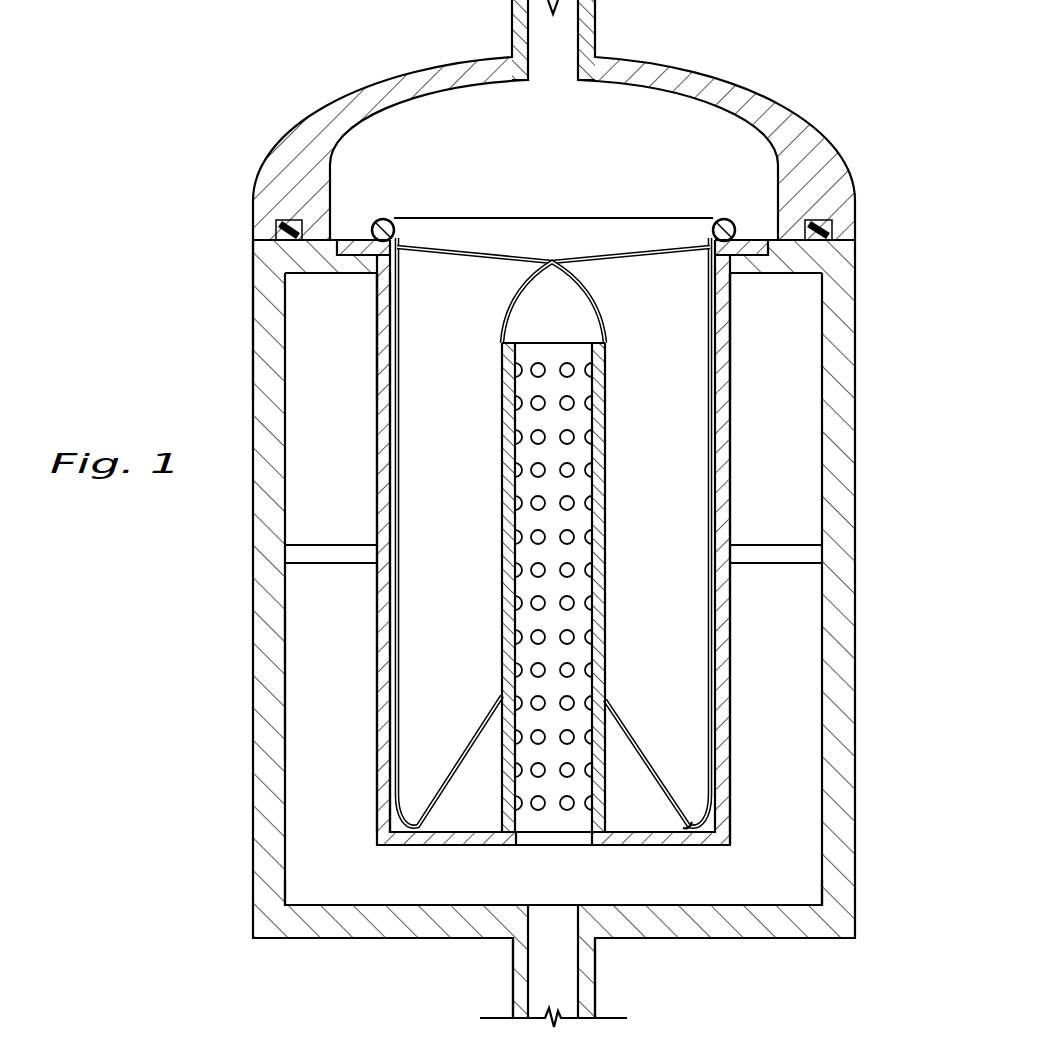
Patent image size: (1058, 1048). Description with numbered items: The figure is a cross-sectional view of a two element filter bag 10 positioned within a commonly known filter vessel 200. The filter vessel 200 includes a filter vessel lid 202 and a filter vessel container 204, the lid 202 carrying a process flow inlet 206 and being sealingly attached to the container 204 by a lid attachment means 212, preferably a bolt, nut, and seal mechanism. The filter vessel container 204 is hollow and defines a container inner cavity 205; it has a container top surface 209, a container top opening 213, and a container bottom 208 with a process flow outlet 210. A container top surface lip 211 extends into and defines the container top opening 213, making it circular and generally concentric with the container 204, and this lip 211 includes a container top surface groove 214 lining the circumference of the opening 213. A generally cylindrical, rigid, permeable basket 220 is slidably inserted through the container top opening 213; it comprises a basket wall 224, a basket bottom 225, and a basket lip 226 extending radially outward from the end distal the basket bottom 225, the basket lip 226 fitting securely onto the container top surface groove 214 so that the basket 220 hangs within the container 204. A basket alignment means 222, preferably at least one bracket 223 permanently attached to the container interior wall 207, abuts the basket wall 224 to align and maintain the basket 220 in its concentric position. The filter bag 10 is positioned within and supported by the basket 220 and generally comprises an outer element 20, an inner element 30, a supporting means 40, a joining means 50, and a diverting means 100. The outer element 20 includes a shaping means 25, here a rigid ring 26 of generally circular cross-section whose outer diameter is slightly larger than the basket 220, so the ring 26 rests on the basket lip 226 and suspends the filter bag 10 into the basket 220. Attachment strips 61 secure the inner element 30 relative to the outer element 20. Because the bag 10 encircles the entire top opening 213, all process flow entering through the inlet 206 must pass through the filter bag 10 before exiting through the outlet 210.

The filter bag 10 is at (775, 849).
The outer element 20 is at (706, 460).
The shaping means 25 is at (395, 215).
The ring 26 is at (714, 216).
The inner element 30 is at (608, 552).
The supporting means 40 is at (553, 828).
The joining means 50 is at (688, 828).
The attachment strips 61 is at (636, 260).
The diverting means 100 is at (517, 300).
The filter vessel 200 is at (843, 92).
The filter vessel lid 202 is at (714, 70).
The filter vessel container 204 is at (254, 598).
The container inner cavity 205 is at (306, 870).
The process flow inlet 206 is at (595, 25).
The container interior wall 207 is at (287, 689).
The container bottom 208 is at (357, 940).
The container top surface 209 is at (272, 231).
The process flow outlet 210 is at (597, 993).
The container top surface lip 211 is at (755, 275).
The lid attachment means 212 is at (215, 272).
The container top opening 213 is at (520, 216).
The container top surface groove 214 is at (346, 275).
The basket 220 is at (731, 768).
The basket alignment means 222 is at (766, 568).
The bracket 223 is at (327, 545).
The basket wall 224 is at (376, 766).
The basket bottom 225 is at (470, 846).
The basket lip 226 is at (347, 240).